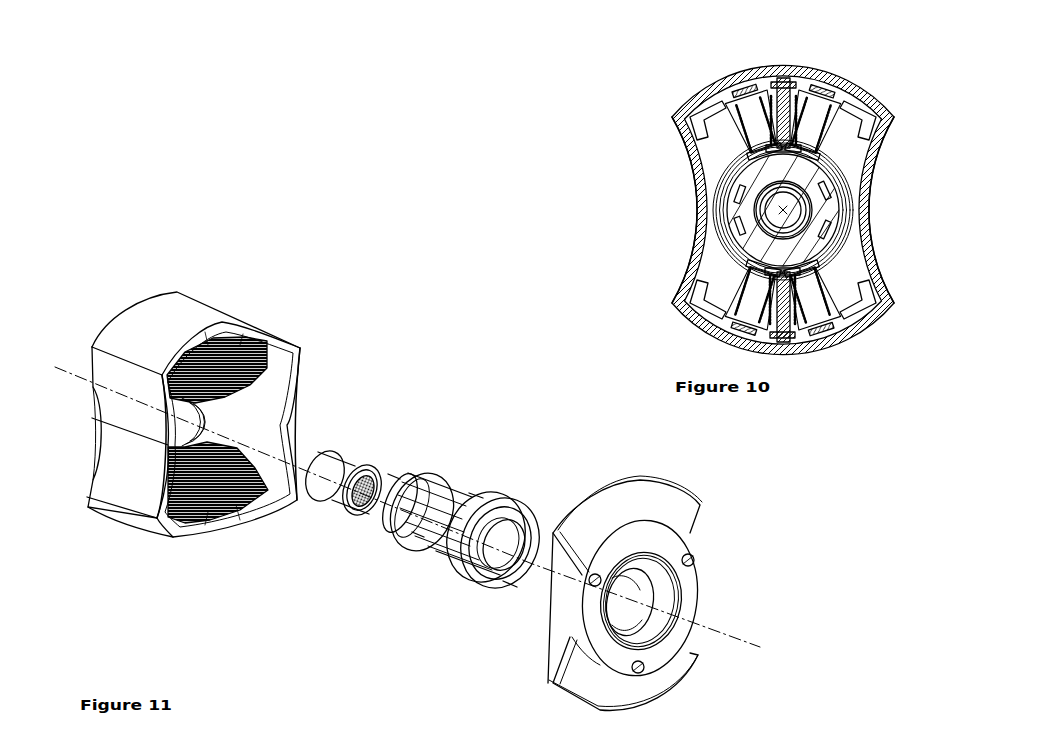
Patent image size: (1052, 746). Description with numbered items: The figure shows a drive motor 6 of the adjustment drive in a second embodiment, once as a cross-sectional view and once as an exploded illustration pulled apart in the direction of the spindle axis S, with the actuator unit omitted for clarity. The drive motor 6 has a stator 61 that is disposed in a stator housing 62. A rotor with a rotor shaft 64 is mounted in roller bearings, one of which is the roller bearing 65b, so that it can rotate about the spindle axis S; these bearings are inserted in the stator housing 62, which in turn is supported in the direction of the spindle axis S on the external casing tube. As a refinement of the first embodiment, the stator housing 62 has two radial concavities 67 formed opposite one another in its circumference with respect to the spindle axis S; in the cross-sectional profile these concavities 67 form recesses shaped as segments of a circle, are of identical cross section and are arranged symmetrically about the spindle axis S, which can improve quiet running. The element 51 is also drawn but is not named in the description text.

In FIG. 10, the drive motor 6 is at (919, 93).
In FIG. 11, the drive motor 6 is at (254, 304).
In FIG. 10, the bushing / bearing sleeve 51 is at (713, 191).
In FIG. 11, the bushing / bearing sleeve 51 is at (345, 466).
In FIG. 10, the stator 61 is at (851, 122).
In FIG. 11, the stator 61 is at (223, 343).
In FIG. 10, the stator housing 62 is at (821, 344).
In FIG. 11, the stator housing 62 is at (150, 330).
In FIG. 10, the rotor shaft 64 is at (855, 194).
In FIG. 11, the rotor shaft 64 is at (452, 498).
In FIG. 11, the roller bearing 65b is at (640, 555).
In FIG. 10, the radial concavity 67 is at (873, 210).
In FIG. 11, the radial concavity 67 is at (287, 410).
In FIG. 10, the spindle axis S is at (789, 213).
In FIG. 11, the spindle axis S is at (65, 366).